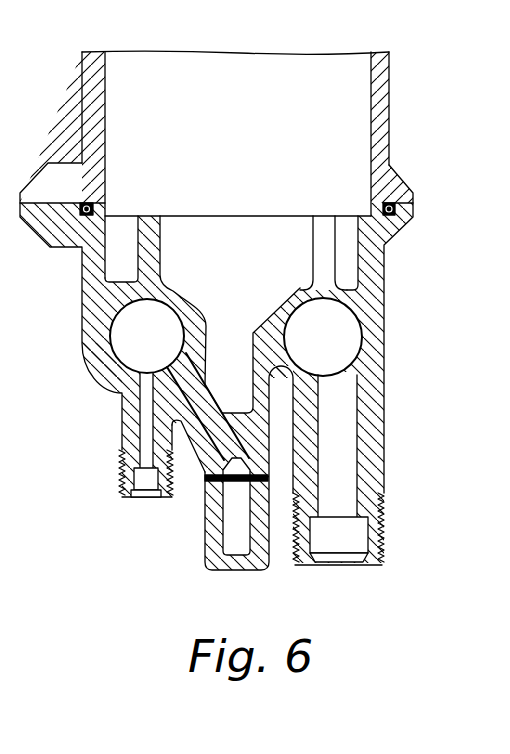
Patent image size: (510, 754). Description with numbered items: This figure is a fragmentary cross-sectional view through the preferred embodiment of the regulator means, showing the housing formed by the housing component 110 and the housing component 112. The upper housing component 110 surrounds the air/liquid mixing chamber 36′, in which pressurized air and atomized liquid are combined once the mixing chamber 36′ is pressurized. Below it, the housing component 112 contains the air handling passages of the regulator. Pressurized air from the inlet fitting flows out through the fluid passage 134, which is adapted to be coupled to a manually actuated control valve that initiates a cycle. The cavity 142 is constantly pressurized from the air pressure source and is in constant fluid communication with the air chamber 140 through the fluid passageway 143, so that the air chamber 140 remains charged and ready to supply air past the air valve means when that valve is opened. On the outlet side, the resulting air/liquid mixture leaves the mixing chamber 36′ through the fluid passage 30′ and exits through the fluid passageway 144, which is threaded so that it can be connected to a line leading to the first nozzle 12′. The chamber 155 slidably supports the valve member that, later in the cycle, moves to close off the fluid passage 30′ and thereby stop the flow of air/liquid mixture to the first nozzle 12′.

The housing component 110 is at (380, 112).
The air/liquid mixing chamber 36′ is at (127, 123).
The housing component 112 is at (95, 268).
The cavity 142 is at (170, 309).
The fluid passage 30′ is at (306, 290).
The chamber 155 is at (354, 333).
The fluid passageway 143 is at (206, 407).
The fluid passageway 144 is at (358, 423).
The fluid passage 134 is at (143, 488).
The air chamber 140 is at (226, 535).
The first nozzle 12′ is at (338, 530).